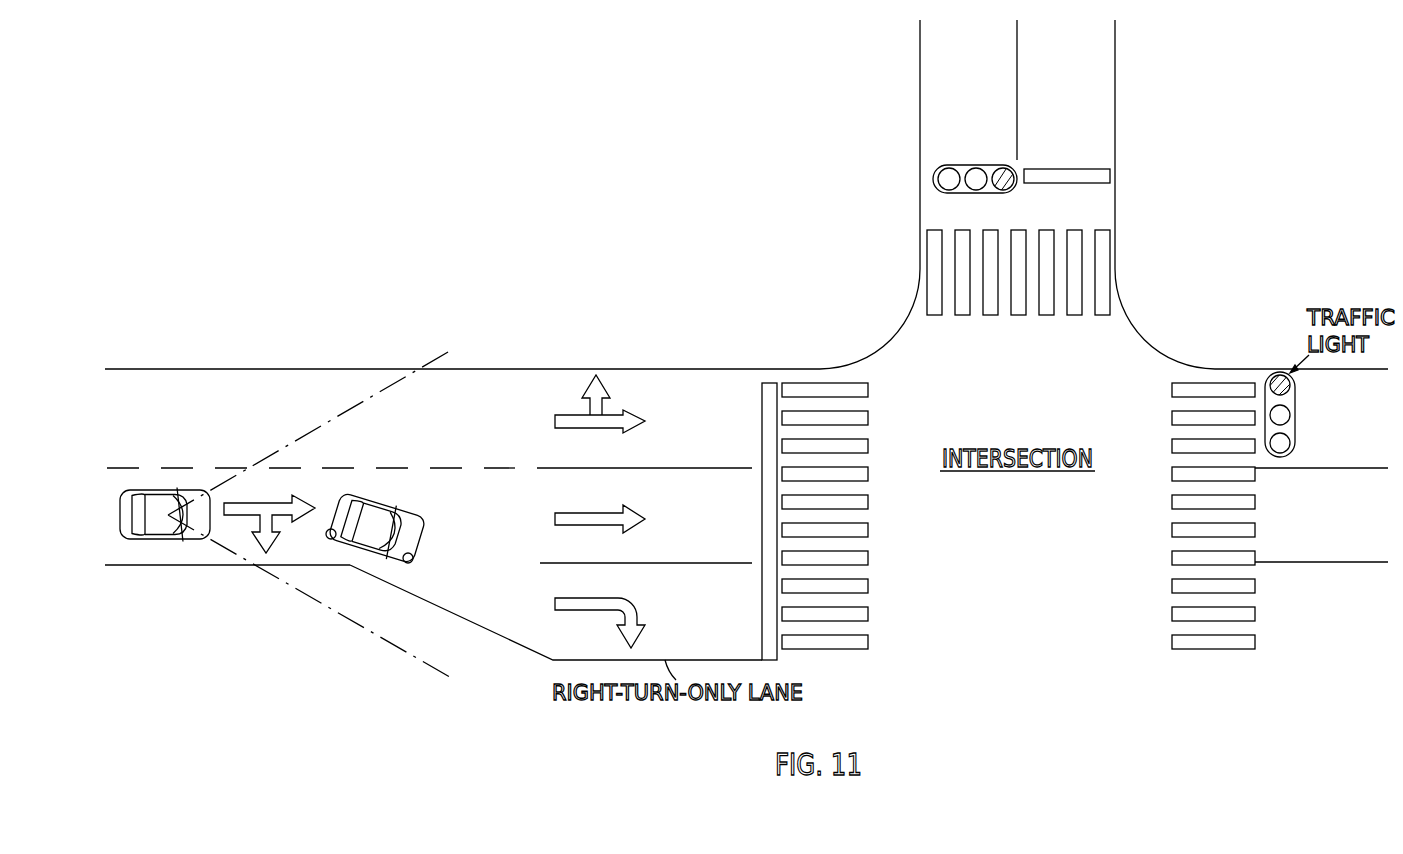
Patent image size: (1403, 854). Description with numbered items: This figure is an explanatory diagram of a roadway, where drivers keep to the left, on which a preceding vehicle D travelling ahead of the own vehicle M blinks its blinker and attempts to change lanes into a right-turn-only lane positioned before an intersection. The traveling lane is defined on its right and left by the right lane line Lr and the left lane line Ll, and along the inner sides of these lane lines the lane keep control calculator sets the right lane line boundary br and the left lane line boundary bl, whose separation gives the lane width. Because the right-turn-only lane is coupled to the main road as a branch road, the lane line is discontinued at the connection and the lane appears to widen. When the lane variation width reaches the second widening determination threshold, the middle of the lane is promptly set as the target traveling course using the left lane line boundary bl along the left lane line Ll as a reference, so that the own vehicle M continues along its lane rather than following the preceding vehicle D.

The own vehicle M is at (158, 540).
The preceding vehicle D is at (420, 535).
The left lane line Ll is at (335, 468).
The right lane line Lr is at (315, 567).
The left lane line boundary bl is at (503, 470).
The right lane line boundary br is at (405, 592).